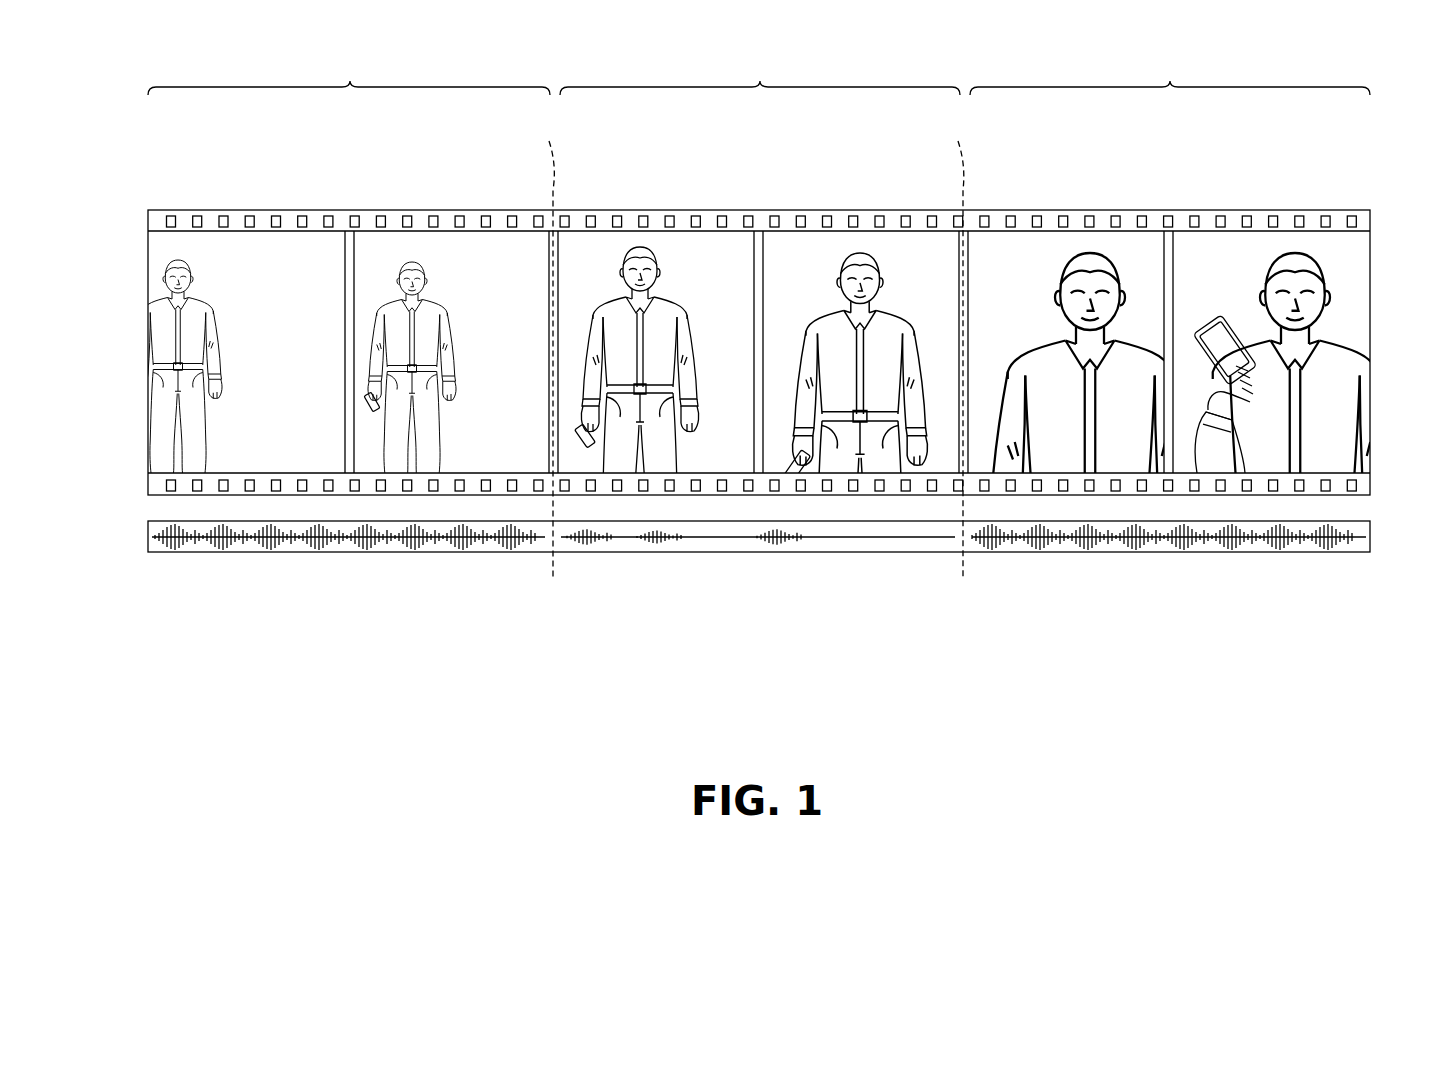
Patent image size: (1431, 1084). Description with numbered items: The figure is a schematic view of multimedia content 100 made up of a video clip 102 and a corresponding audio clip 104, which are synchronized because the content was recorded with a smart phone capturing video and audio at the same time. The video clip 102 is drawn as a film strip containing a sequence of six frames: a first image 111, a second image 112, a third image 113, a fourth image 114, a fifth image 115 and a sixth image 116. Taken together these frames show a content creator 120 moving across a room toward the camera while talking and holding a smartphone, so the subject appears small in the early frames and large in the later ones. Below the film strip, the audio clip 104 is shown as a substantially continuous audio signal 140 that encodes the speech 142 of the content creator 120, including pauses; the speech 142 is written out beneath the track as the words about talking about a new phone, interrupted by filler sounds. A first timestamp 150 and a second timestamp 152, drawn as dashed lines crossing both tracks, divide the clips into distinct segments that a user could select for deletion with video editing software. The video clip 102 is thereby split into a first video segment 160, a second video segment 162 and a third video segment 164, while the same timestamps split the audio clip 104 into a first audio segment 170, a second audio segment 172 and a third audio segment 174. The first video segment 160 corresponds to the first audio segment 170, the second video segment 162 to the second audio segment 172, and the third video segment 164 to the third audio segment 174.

The multimedia content 100 is at (1271, 182).
The video clip 102 is at (1373, 258).
The audio clip 104 is at (1372, 539).
The first image 111 is at (261, 240).
The second image 112 is at (478, 240).
The third image 113 is at (707, 240).
The fourth image 114 is at (922, 240).
The fifth image 115 is at (1022, 240).
The sixth image 116 is at (1235, 240).
The content creator 120 is at (213, 324).
The audio signal 140 is at (1231, 540).
The speech 142 is at (387, 689).
The first timestamp 150 is at (560, 346).
The second timestamp 152 is at (960, 346).
The first video segment 160 is at (349, 72).
The second video segment 162 is at (760, 72).
The third video segment 164 is at (1170, 72).
The first audio segment 170 is at (273, 553).
The second audio segment 172 is at (742, 553).
The third audio segment 174 is at (1170, 553).